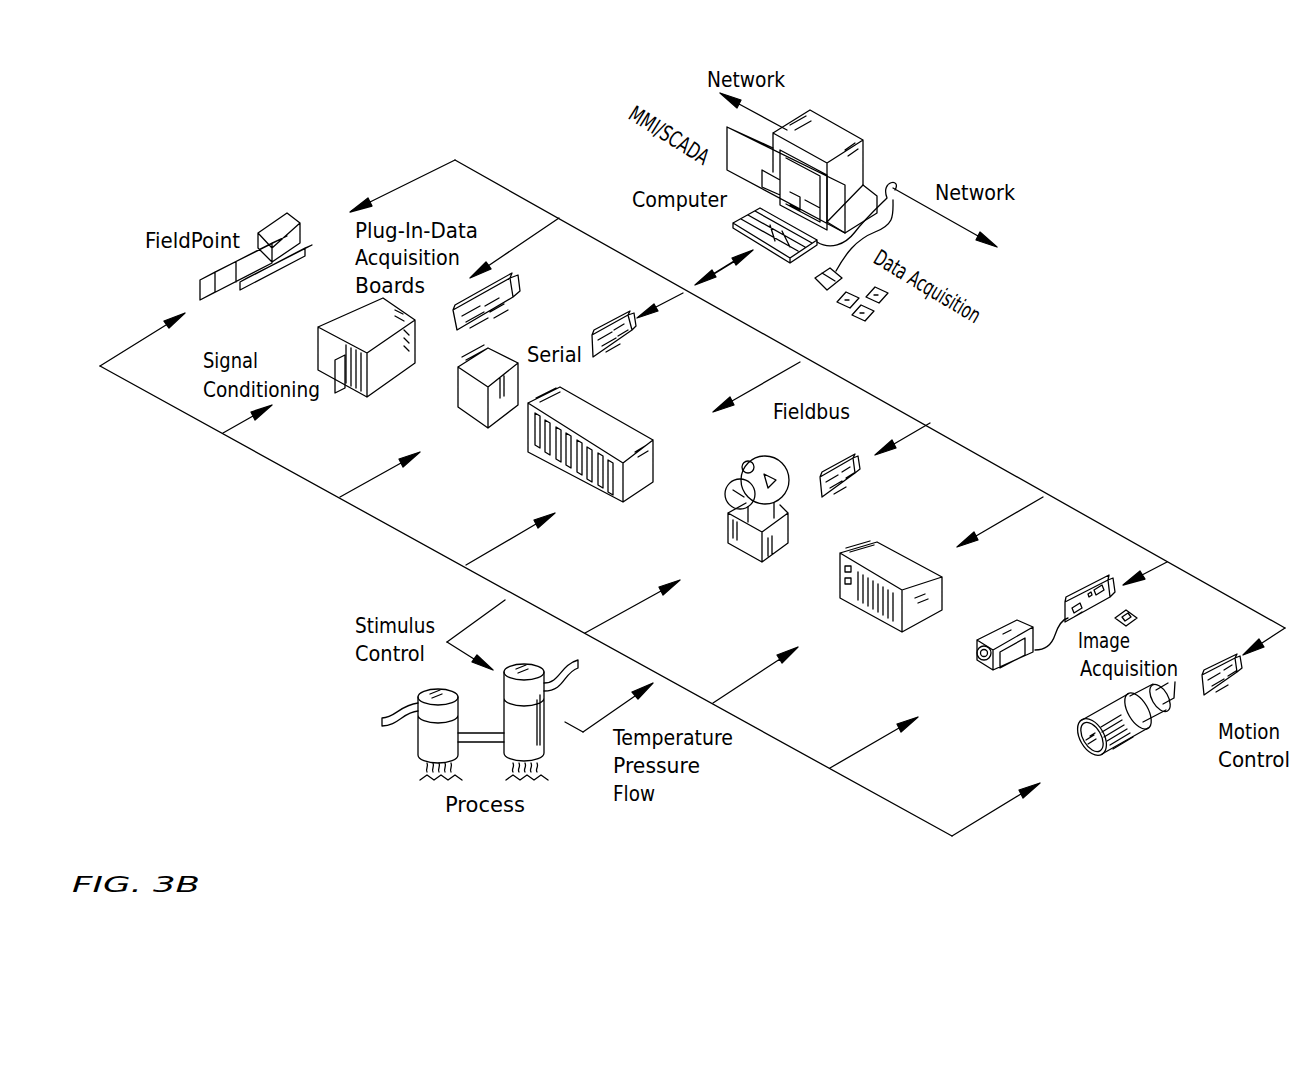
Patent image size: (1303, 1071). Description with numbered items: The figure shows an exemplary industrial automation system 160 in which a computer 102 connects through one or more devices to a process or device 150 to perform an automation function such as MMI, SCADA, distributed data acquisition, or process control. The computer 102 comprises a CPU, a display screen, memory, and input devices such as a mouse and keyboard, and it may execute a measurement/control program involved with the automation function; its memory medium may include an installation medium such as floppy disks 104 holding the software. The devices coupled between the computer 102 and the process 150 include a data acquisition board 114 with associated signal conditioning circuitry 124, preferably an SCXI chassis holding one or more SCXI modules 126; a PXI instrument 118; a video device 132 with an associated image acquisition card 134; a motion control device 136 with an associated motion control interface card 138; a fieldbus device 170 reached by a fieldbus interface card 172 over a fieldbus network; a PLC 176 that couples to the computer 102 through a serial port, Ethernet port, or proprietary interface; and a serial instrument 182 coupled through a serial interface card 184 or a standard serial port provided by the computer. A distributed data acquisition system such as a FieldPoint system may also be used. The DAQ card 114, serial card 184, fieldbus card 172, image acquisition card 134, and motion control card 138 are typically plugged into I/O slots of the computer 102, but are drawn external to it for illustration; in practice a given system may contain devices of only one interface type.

The computer 102 is at (832, 128).
The floppy disks 104 is at (863, 320).
The data acquisition board 114 is at (508, 282).
The PXI instrument 118 is at (883, 553).
The signal conditioning circuitry 124 is at (347, 323).
The SCXI modules 126 is at (344, 382).
The video device 132 is at (1012, 620).
The image acquisition card 134 is at (1085, 589).
The motion control device 136 is at (1110, 742).
The motion control interface card 138 is at (1222, 685).
The process or device 150 is at (393, 718).
The industrial automation system 160 is at (1157, 188).
The fieldbus device 170 is at (772, 548).
The fieldbus interface card 172 is at (843, 458).
The PLC 176 is at (602, 430).
The serial instrument 182 is at (466, 406).
The serial interface card 184 is at (605, 326).